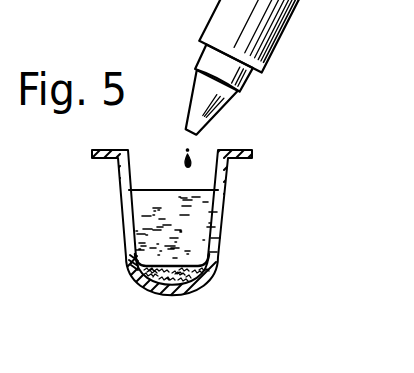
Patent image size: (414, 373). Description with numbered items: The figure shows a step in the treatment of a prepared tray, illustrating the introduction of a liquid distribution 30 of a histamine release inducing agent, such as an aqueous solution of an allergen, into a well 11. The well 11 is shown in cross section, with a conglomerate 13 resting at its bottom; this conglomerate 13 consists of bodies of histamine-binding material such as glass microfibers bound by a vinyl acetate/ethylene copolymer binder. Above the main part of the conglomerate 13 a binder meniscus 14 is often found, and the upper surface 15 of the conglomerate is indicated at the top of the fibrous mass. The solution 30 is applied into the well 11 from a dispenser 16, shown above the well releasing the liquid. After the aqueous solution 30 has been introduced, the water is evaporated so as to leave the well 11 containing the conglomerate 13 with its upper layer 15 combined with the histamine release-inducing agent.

The well 11 is at (228, 192).
The liquid distribution 30 is at (118, 223).
The binder meniscus 14 is at (127, 261).
The conglomerate 13 is at (152, 294).
The upper surface of the conglomerate 15 is at (178, 294).
The dispenser 16 is at (274, 48).